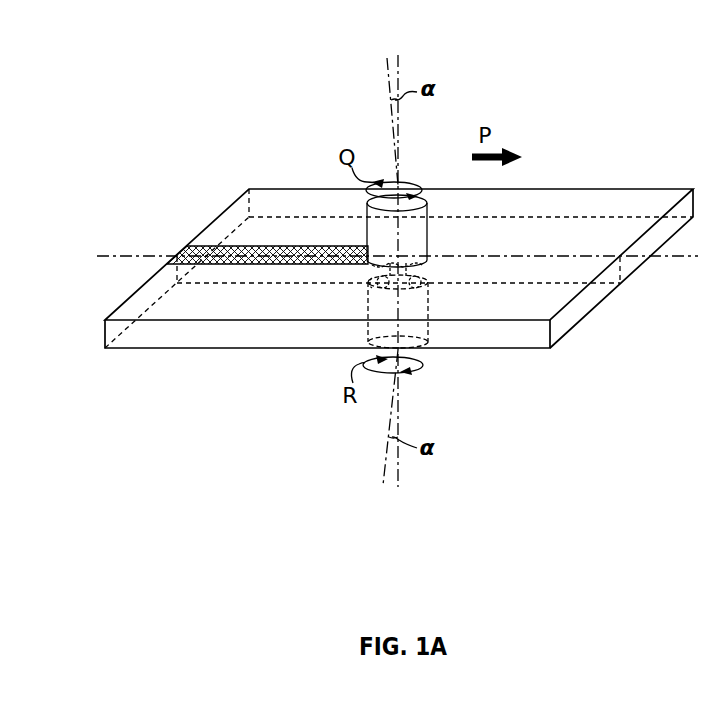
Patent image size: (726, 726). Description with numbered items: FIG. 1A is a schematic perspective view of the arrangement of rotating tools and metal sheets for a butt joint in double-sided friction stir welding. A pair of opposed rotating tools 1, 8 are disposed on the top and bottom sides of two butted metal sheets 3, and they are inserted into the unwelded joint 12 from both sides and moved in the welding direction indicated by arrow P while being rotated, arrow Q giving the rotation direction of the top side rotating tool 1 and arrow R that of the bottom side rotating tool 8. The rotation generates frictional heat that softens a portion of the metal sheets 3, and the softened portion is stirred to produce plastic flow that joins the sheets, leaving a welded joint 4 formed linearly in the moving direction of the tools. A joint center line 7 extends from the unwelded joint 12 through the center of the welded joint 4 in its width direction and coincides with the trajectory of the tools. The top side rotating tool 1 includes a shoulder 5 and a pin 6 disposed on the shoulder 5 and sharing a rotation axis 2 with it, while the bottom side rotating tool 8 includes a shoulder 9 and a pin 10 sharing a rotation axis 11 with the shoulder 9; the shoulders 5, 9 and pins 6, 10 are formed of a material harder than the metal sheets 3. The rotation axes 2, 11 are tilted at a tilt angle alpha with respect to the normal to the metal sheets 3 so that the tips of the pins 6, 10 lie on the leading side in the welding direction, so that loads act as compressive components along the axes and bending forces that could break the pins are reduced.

The rotating tool 1 is at (422, 232).
The rotation axis 2 is at (388, 73).
The metal sheets 3 is at (640, 231).
The welded joint 4 is at (200, 245).
The shoulder 5 is at (430, 258).
The pin 6 is at (410, 270).
The joint center line 7 is at (123, 255).
The rotating tool 8 is at (417, 330).
The shoulder 9 is at (430, 293).
The pin 10 is at (373, 283).
The rotation axis 11 is at (385, 460).
The unwelded joint 12 is at (579, 275).